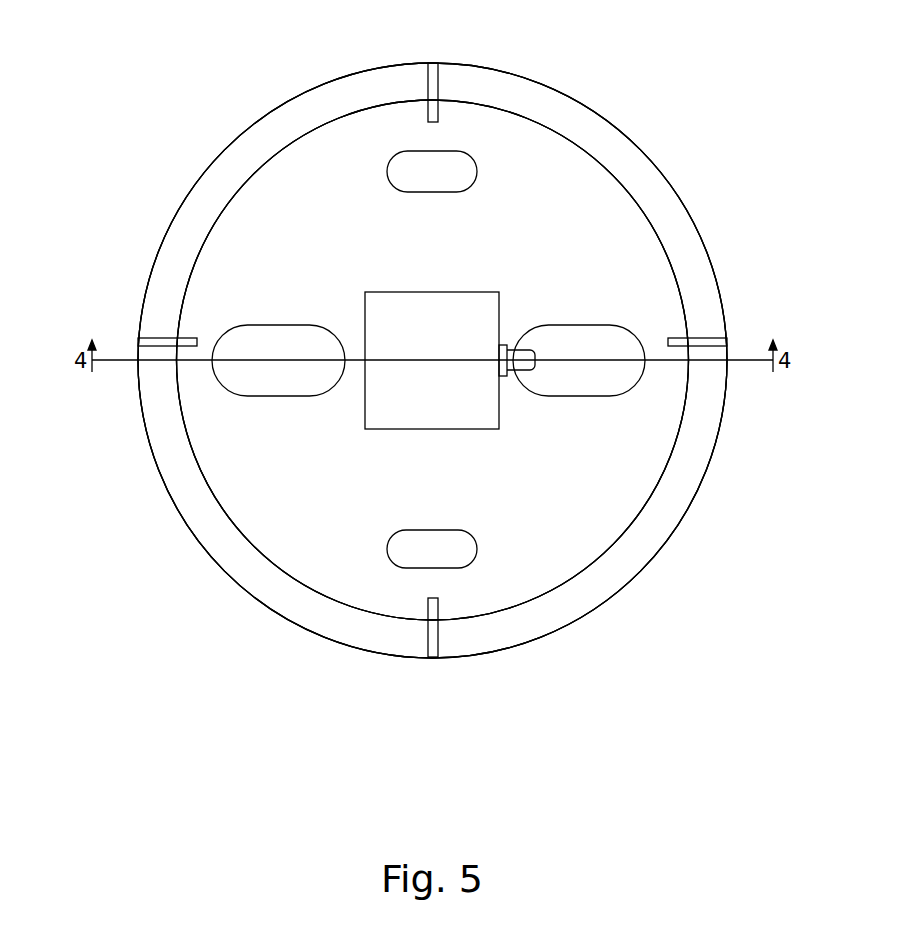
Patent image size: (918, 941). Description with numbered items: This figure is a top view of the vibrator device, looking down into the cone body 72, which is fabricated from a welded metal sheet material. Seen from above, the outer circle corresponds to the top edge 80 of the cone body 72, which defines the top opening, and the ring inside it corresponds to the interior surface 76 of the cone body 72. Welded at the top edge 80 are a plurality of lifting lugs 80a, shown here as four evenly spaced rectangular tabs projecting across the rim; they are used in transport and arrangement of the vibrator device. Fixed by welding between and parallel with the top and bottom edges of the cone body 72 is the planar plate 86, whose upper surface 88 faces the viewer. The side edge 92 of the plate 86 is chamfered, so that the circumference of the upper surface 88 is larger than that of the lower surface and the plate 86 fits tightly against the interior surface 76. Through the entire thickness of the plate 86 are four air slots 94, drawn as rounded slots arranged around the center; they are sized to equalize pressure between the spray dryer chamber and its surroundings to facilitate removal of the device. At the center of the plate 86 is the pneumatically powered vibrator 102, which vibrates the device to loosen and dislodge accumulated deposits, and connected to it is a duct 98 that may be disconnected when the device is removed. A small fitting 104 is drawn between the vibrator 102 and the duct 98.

The cone body 72 is at (195, 185).
The interior surface 76 is at (457, 82).
The top edge 80 is at (667, 178).
The lifting lugs 80a is at (428, 72).
The plate 86 is at (543, 183).
The upper surface 88 is at (647, 422).
The side edge 92 is at (608, 550).
The air slots 94 is at (463, 151).
The duct 98 is at (530, 353).
The vibrator 102 is at (432, 291).
The collar 104 is at (503, 345).